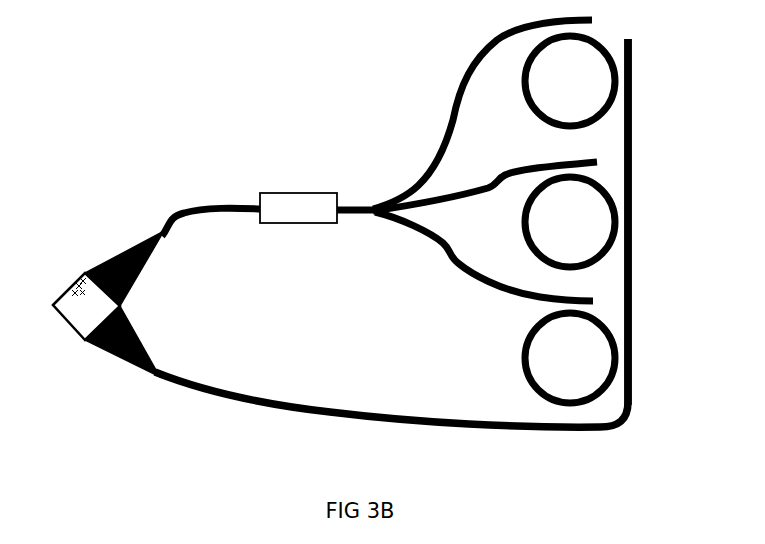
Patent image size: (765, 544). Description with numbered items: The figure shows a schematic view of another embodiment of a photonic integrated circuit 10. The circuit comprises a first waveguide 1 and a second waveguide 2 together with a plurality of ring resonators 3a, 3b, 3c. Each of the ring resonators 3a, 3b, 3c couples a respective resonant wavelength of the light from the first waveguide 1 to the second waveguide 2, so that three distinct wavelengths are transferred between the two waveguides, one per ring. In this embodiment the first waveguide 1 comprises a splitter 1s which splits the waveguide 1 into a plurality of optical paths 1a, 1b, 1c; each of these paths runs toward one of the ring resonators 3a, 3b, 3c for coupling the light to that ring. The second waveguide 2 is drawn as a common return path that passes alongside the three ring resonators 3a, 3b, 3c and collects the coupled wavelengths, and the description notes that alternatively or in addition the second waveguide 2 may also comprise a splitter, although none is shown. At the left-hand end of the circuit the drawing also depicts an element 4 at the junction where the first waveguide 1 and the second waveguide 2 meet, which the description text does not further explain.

The photonic integrated circuit 10 is at (110, 124).
The first waveguide 1 is at (201, 198).
The splitter 1s is at (295, 178).
The optical path 1a is at (411, 162).
The optical path 1b is at (487, 161).
The optical path 1c is at (411, 229).
The second waveguide 2 is at (185, 406).
The ring resonator 3a is at (570, 81).
The ring resonator 3b is at (570, 222).
The ring resonator 3c is at (570, 358).
The sensing element / reflector 4 is at (70, 279).